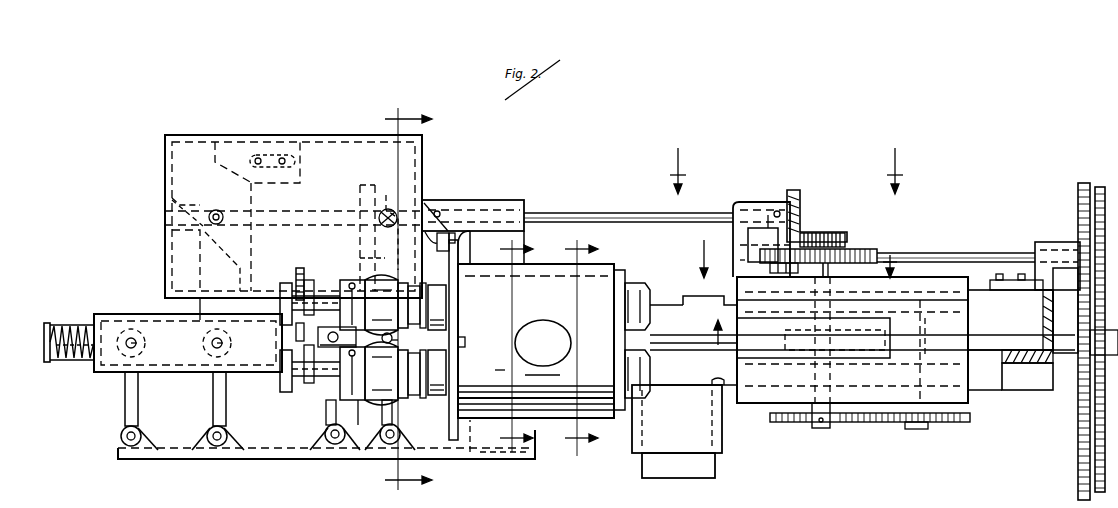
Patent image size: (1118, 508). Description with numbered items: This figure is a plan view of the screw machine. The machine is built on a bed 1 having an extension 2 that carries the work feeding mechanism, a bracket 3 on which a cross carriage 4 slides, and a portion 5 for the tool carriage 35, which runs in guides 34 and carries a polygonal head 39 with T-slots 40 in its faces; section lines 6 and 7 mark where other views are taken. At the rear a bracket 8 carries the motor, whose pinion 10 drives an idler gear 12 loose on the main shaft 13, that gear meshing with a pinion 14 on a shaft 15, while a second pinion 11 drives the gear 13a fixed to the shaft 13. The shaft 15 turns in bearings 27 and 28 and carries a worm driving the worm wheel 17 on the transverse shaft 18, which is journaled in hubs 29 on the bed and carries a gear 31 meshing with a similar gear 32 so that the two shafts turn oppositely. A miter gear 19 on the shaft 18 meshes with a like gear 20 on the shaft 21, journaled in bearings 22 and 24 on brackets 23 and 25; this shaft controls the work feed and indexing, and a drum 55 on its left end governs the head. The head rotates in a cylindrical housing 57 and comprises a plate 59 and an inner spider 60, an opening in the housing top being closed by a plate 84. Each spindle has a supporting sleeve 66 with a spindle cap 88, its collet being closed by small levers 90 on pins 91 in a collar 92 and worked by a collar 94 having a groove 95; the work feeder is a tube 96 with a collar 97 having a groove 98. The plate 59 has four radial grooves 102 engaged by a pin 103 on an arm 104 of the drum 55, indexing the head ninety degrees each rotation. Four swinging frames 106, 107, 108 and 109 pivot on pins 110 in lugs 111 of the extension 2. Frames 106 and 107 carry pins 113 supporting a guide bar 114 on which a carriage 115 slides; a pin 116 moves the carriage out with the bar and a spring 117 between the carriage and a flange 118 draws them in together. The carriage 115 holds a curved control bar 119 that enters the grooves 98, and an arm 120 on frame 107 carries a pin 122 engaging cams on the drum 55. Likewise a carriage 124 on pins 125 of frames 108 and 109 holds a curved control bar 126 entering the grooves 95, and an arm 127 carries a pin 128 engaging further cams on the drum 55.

The bed 1 is at (693, 340).
The extension 2 is at (286, 388).
The bracket 3 is at (678, 465).
The cross carriage 4 is at (678, 415).
The portion for the tool carriage 5 is at (1023, 310).
The section line 6— 6 is at (575, 348).
The section line 7— 7 is at (510, 346).
The bracket 8 is at (1016, 408).
The pinion 10 is at (862, 343).
The second pinion 11 is at (803, 259).
The idler gear 12 is at (1072, 434).
The main shaft 13 is at (684, 337).
The gear 13a is at (1080, 207).
The pinion 14 is at (787, 170).
The shaft 15 is at (950, 252).
The worm wheel 17 is at (882, 249).
The transverse shaft 18 is at (812, 393).
The miter gear 19 is at (846, 232).
The miter gear 20 is at (802, 203).
The shaft 21 is at (576, 210).
The bearing 22 is at (750, 210).
The bracket 23 is at (763, 238).
The bearing 24 is at (494, 205).
The bracket 25 is at (520, 241).
The bearing 27 is at (703, 296).
The bearing 28 is at (1052, 250).
The hubs 29 is at (828, 276).
The gear 31 is at (772, 416).
The gear 32 is at (960, 422).
The guides 34 is at (976, 295).
The tool carriage 35 is at (934, 350).
The polygonal head 39 is at (888, 330).
The T-slots 40 is at (757, 362).
The drum 55 is at (280, 140).
The cylindrical housing 57 is at (536, 341).
The plate 59 is at (459, 318).
The inner spider 60 is at (622, 282).
The supporting sleeve 66 is at (437, 340).
The plate 84 is at (560, 336).
The spindle cap 88 is at (642, 298).
The small levers 90 is at (381, 340).
The pins 91 is at (352, 340).
The collar 92 is at (353, 412).
The collar 94 is at (410, 427).
The groove 95 is at (420, 400).
The tube 96 is at (312, 296).
The collar 97 is at (296, 296).
The groove 98 is at (280, 304).
The radial grooves 102 is at (466, 342).
The pin 103 is at (444, 226).
The arm 104 is at (443, 251).
The swinging frame 106 is at (135, 403).
The swinging frame 107 is at (222, 406).
The swinging frame 108 is at (334, 412).
The swinging frame 109 is at (388, 412).
The pins 110 is at (121, 438).
The lugs 111 is at (416, 439).
The pins 113 is at (200, 343).
The guide bar 114 is at (69, 330).
The carriage 115 is at (132, 318).
The pin 116 is at (326, 337).
The spring 117 is at (78, 358).
The flange 118 is at (46, 348).
The curved control bar 119 is at (296, 275).
The arm 120 is at (200, 308).
The pin 122 is at (218, 210).
The carriage 124 is at (330, 350).
The pins 125 is at (423, 339).
The curved control bar 126 is at (395, 346).
The arm 127 is at (360, 253).
The pin 128 is at (379, 222).